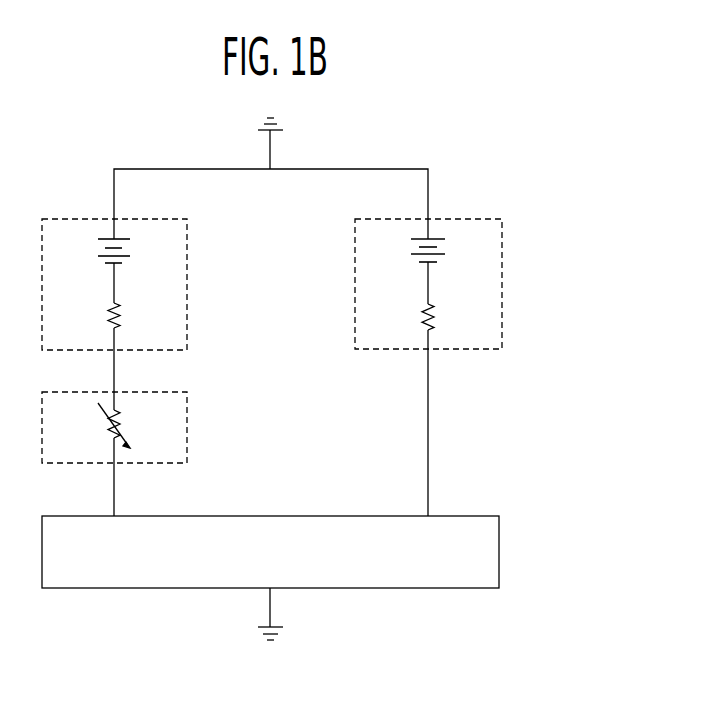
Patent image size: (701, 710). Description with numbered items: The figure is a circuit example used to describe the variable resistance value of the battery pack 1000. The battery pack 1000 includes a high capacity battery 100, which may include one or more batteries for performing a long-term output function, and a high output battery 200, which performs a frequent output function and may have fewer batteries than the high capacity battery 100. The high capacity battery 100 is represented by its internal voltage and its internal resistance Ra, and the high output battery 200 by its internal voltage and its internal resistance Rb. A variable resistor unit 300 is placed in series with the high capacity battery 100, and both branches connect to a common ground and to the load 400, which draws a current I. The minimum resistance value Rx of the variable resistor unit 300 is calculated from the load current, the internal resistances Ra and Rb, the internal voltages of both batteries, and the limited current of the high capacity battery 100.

The battery pack 1000 is at (543, 97).
The high capacity battery 100 is at (187, 277).
The high output battery 200 is at (502, 275).
The variable resistor unit 300 is at (187, 427).
The load 400 is at (499, 550).